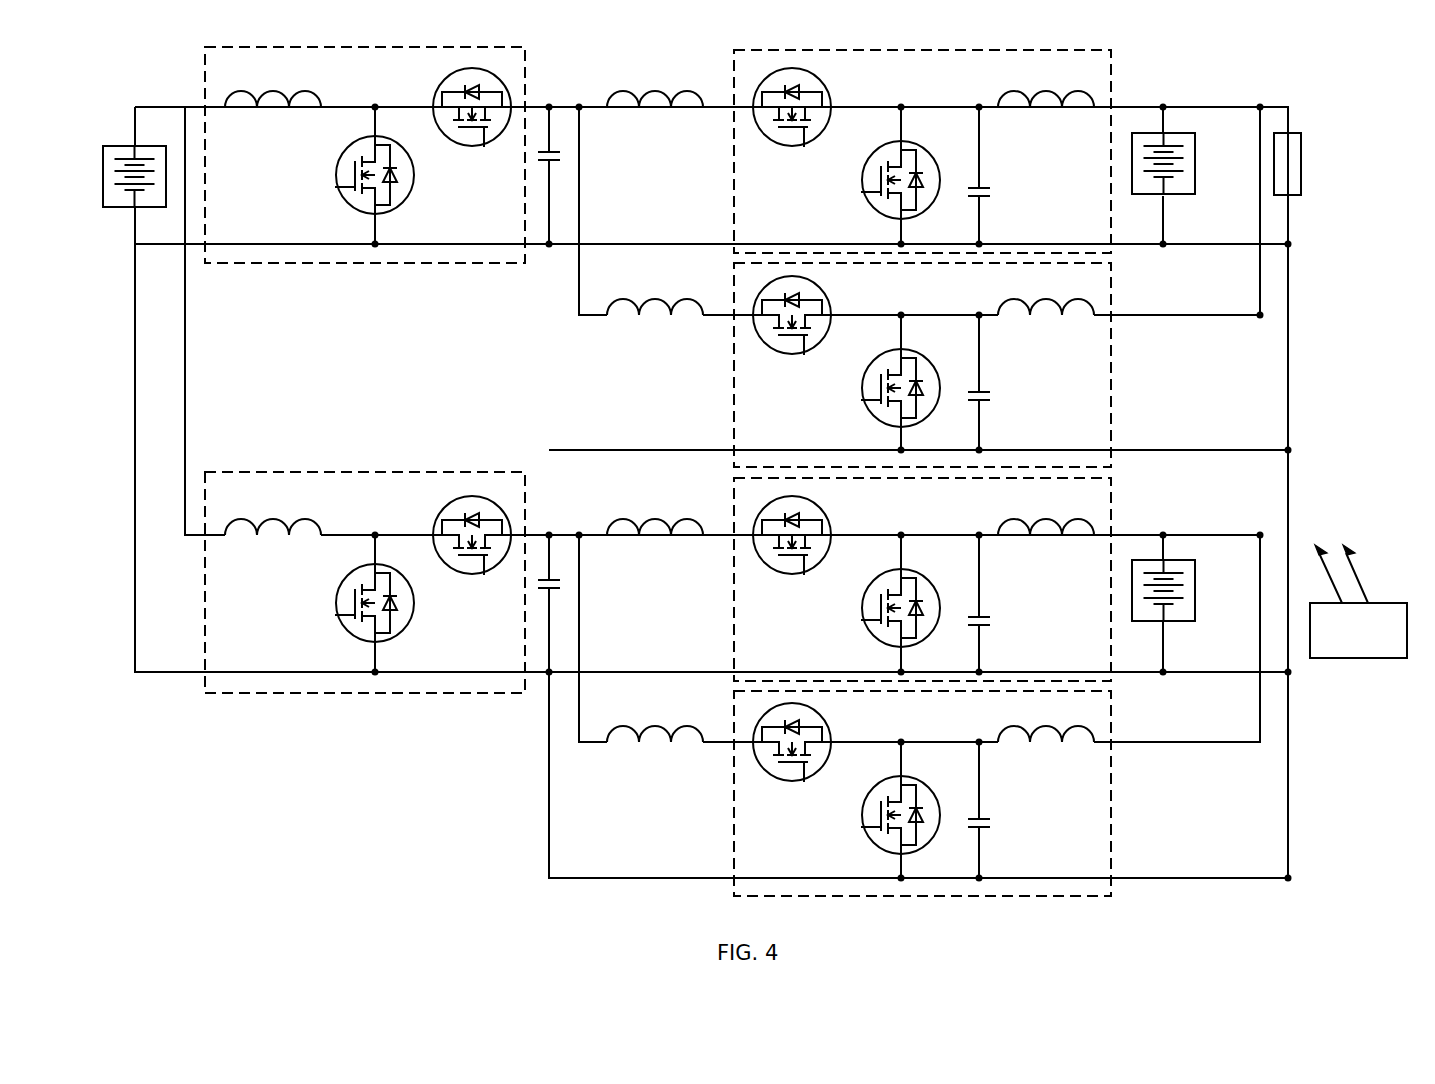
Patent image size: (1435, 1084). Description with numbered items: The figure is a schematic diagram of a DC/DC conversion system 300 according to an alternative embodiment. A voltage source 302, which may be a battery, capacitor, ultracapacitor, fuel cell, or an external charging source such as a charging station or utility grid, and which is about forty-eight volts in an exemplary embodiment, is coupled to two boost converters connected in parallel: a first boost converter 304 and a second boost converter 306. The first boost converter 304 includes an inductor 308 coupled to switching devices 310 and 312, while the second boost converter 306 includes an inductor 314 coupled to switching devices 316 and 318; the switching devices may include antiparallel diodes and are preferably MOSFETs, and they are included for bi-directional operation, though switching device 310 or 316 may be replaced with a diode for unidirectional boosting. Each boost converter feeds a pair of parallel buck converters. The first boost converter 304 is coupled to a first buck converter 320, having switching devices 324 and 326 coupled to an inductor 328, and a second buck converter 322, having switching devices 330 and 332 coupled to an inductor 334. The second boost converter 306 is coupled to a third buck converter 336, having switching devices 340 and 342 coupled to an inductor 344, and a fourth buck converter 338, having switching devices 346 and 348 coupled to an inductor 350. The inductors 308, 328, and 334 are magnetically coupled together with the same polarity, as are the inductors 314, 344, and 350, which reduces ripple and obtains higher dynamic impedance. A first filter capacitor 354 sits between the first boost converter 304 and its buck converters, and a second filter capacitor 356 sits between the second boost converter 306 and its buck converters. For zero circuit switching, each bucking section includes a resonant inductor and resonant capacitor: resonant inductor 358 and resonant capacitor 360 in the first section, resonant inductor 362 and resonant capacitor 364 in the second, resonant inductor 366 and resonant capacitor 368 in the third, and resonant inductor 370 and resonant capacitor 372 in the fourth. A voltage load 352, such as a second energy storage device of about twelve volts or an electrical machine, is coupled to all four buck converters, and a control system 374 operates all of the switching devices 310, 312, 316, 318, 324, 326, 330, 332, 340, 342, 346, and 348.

The DC/DC conversion system 300 is at (1328, 75).
The voltage source 302 is at (110, 144).
The first boost converter 304 is at (358, 266).
The second boost converter 306 is at (355, 695).
The inductor 308 is at (278, 100).
The switching device 310 is at (489, 157).
The switching device 312 is at (350, 188).
The inductor 314 is at (278, 528).
The switching device 316 is at (489, 585).
The switching device 318 is at (350, 616).
The first buck converter 320 is at (1114, 80).
The second buck converter 322 is at (1114, 380).
The switching device 324 is at (775, 146).
The switching device 326 is at (860, 194).
The inductor 328 is at (1052, 100).
The switching device 330 is at (775, 354).
The switching device 332 is at (860, 402).
The inductor 334 is at (1052, 308).
The third buck converter 336 is at (1114, 502).
The fourth buck converter 338 is at (1114, 805).
The switching device 340 is at (775, 574).
The switching device 342 is at (860, 622).
The inductor 344 is at (1052, 528).
The switching device 346 is at (775, 781).
The switching device 348 is at (860, 829).
The inductor 350 is at (1052, 735).
The voltage load 352 is at (1302, 165).
The first filter capacitor 354 is at (553, 158).
The second filter capacitor 356 is at (553, 588).
The resonant inductor 358 is at (655, 100).
The resonant capacitor 360 is at (985, 196).
The resonant inductor 362 is at (655, 308).
The resonant capacitor 364 is at (985, 400).
The resonant inductor 366 is at (655, 528).
The resonant capacitor 368 is at (985, 625).
The resonant inductor 370 is at (655, 735).
The resonant capacitor 372 is at (985, 828).
The control system 374 is at (1352, 660).